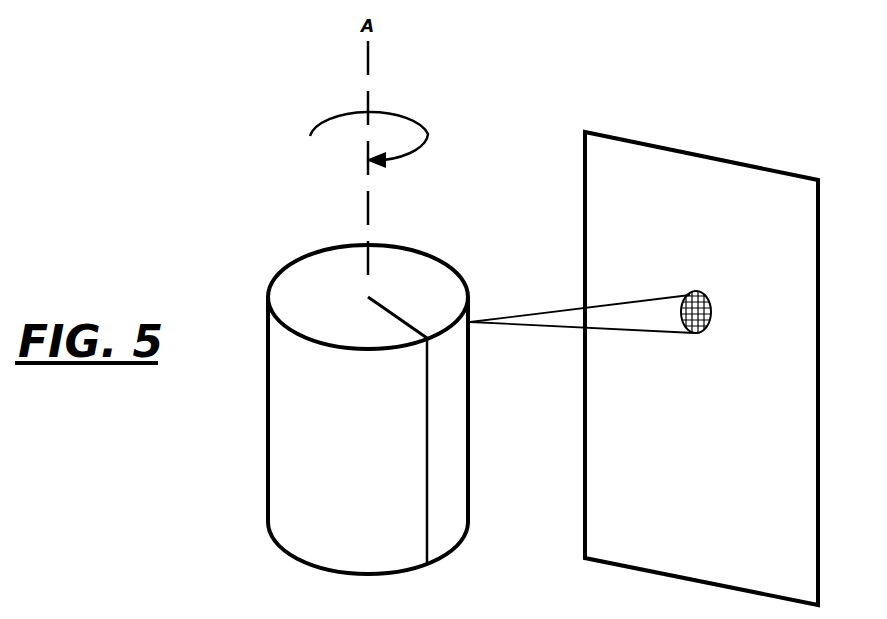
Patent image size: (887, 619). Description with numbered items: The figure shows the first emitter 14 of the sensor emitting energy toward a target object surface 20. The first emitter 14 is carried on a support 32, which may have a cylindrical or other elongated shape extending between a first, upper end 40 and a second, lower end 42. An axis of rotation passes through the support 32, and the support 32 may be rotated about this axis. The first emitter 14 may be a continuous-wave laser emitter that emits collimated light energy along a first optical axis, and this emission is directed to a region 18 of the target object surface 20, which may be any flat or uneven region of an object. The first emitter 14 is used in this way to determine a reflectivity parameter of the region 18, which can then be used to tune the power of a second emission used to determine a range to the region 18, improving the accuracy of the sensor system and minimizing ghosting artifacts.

The first emitter 14 is at (474, 319).
The region 18 is at (700, 292).
The target object surface 20 is at (798, 165).
The support 32 is at (258, 437).
The first end 40 is at (281, 297).
The second end 42 is at (305, 567).